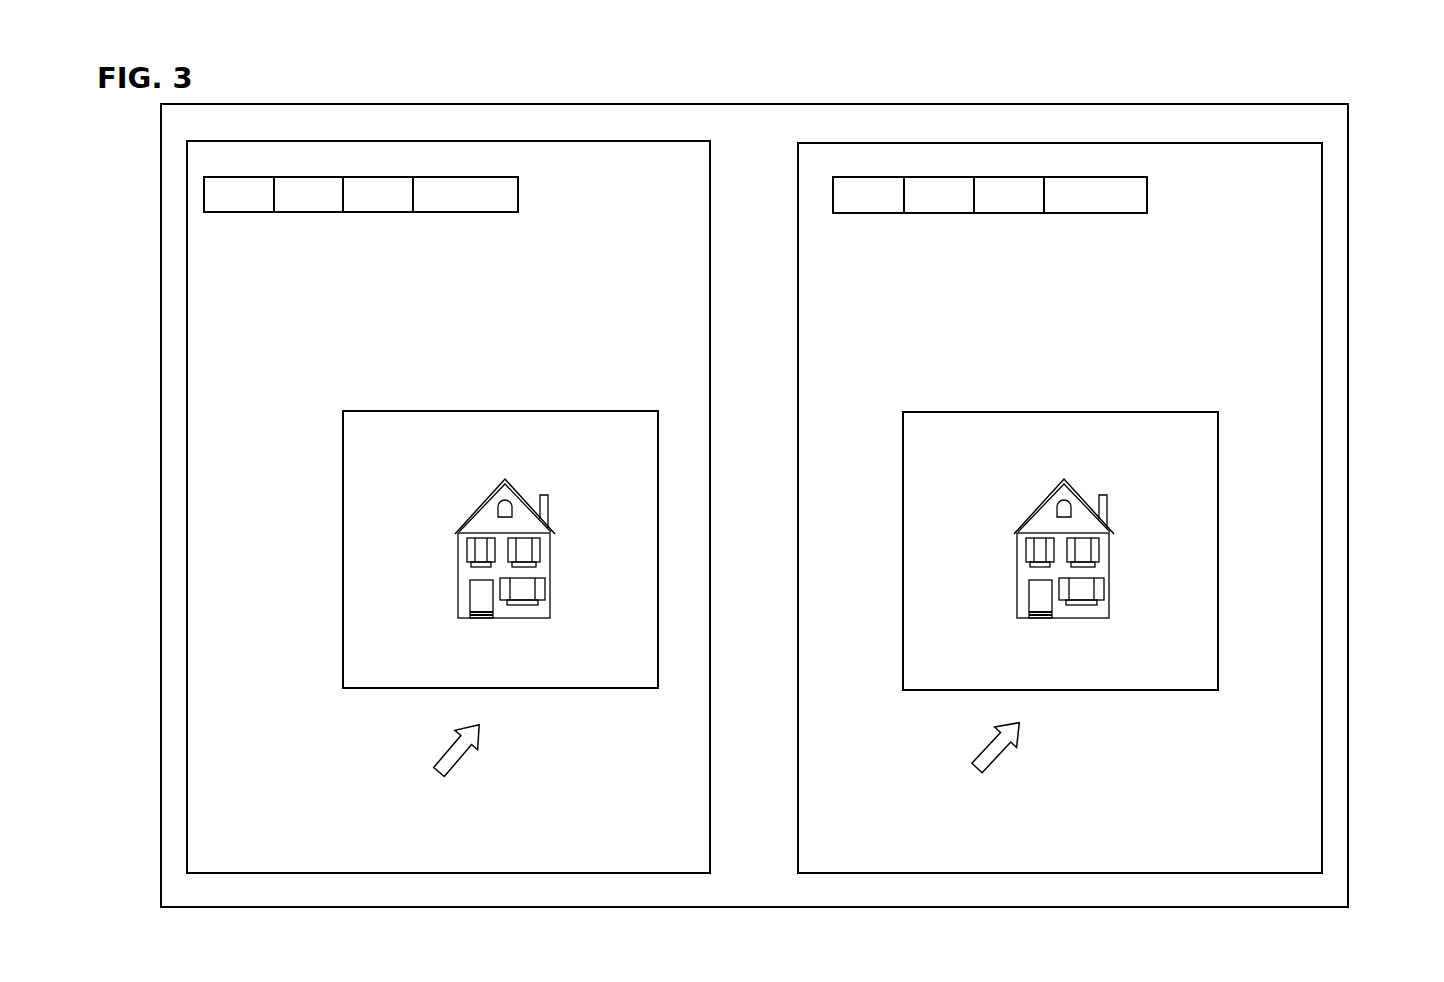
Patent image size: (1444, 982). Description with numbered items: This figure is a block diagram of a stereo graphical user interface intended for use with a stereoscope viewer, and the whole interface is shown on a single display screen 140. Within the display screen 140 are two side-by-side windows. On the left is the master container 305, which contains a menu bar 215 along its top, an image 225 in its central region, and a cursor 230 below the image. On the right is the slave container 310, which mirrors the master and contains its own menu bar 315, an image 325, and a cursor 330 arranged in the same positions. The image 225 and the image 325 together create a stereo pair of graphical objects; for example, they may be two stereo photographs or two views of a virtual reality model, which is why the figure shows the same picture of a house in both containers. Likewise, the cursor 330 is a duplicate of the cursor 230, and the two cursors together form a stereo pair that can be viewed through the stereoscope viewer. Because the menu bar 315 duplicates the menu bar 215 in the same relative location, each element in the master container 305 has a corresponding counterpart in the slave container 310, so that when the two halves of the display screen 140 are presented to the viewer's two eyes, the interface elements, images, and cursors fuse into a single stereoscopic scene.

The display screen 140 is at (592, 95).
The master container 305 is at (175, 349).
The slave container 310 is at (1335, 350).
The menu bar 215 is at (540, 196).
The menu bar 315 is at (1038, 200).
The image 225 is at (493, 402).
The image 325 is at (1060, 525).
The cursor 230 is at (452, 792).
The cursor 330 is at (1005, 782).